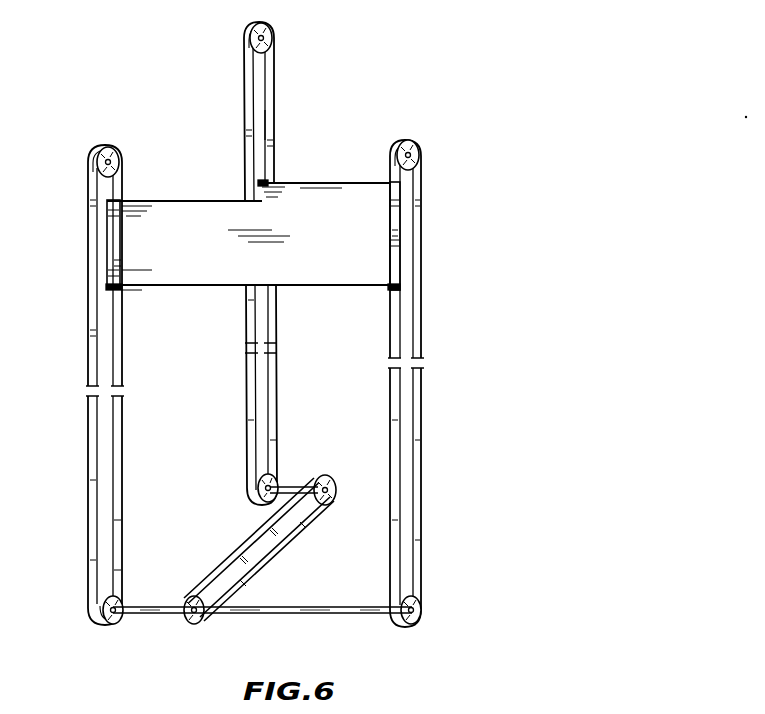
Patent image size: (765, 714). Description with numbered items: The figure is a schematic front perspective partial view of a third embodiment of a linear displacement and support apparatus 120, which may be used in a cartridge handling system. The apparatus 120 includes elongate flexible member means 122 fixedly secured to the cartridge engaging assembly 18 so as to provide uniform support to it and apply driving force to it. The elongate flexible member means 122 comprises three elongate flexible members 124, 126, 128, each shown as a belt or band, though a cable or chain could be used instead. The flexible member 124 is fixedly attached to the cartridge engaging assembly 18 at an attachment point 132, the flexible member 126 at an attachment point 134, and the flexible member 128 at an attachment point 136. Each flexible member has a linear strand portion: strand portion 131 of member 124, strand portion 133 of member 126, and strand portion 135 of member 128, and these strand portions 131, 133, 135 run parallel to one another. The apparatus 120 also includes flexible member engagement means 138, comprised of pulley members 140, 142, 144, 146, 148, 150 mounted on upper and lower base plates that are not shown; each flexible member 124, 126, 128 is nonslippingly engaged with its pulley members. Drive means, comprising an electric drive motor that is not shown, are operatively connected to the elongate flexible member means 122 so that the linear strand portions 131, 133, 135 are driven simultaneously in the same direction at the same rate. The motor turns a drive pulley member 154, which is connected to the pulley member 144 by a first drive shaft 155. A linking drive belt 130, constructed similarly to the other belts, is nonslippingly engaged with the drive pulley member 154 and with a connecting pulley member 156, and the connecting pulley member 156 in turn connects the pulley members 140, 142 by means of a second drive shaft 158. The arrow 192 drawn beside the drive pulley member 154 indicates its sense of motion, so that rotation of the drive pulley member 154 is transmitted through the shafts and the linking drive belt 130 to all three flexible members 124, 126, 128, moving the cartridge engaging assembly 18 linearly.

The cartridge engaging assembly 18 is at (189, 212).
The linear displacement and support apparatus 120 is at (180, 99).
The elongate flexible member means 122 is at (237, 415).
The elongate flexible member 124 is at (276, 92).
The elongate flexible member 126 is at (420, 338).
The elongate flexible member 128 is at (90, 325).
The linking drive belt 130 is at (275, 556).
The linear strand portion 131 is at (272, 126).
The attachment point 132 is at (264, 185).
The linear strand portion 133 is at (392, 246).
The attachment point 134 is at (392, 288).
The linear strand portion 135 is at (120, 262).
The attachment point 136 is at (116, 290).
The flexible member engagement means 138 is at (433, 590).
The pulley member 140 is at (420, 616).
The pulley member 142 is at (114, 622).
The pulley member 144 is at (262, 500).
The pulley member 146 is at (114, 158).
The pulley member 148 is at (269, 34).
The pulley member 150 is at (417, 148).
The drive pulley member 154 is at (332, 484).
The first drive shaft 155 is at (295, 486).
The connecting pulley member 156 is at (200, 622).
The second drive shaft 158 is at (315, 612).
The rotation direction 192 is at (342, 500).